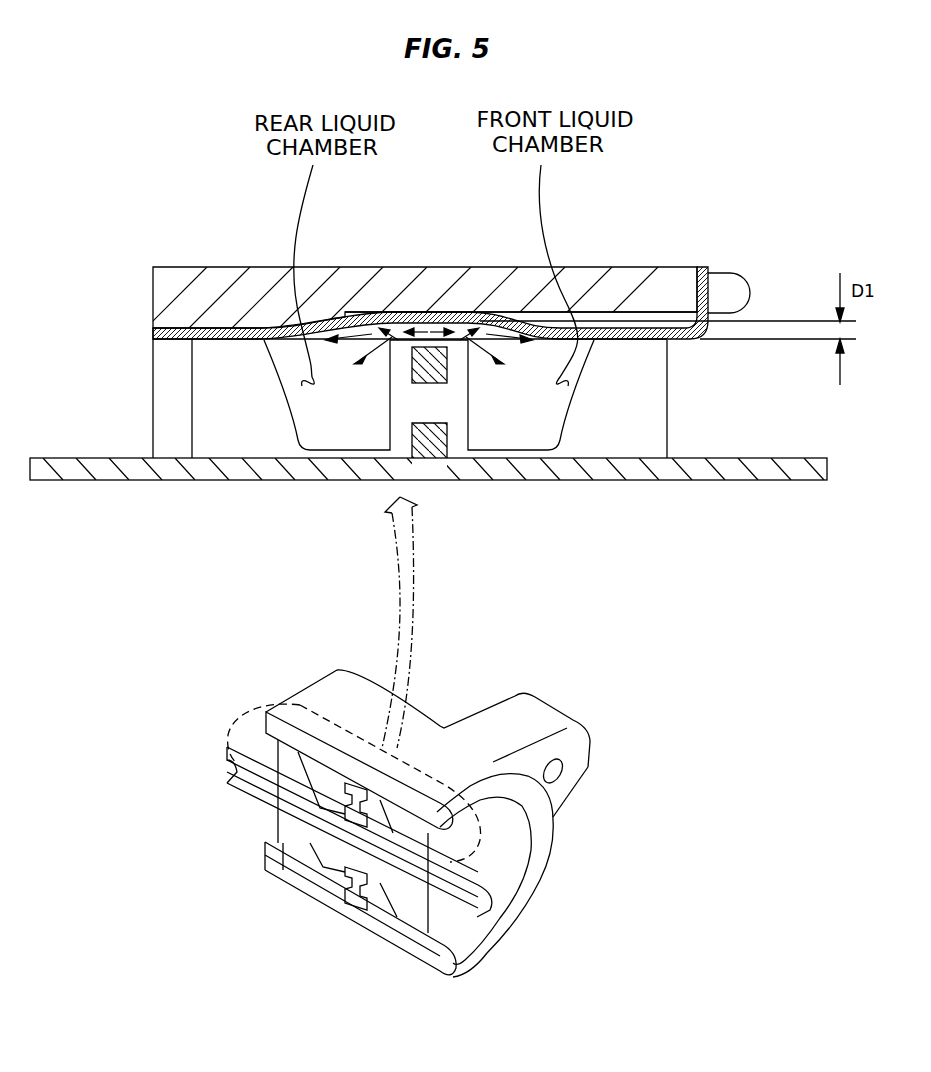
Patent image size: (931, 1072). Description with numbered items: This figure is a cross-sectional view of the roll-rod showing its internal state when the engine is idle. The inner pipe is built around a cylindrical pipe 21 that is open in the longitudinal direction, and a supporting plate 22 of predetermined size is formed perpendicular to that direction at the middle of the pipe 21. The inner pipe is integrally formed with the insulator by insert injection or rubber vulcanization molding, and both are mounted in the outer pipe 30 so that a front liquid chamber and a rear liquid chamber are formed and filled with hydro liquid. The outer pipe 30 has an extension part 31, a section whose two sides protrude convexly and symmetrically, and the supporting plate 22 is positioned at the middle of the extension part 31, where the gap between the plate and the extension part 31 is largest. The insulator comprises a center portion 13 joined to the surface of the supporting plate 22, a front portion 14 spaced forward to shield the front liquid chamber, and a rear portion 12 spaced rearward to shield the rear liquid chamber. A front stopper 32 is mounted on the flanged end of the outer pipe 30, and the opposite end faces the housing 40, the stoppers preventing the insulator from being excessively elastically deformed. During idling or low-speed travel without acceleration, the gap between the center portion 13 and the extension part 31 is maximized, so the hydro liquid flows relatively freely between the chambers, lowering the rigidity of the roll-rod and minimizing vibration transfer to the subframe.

The rear portion 12 is at (217, 378).
The center portion 13 is at (458, 365).
The front portion 14 is at (622, 393).
The cylindrical pipe 21 is at (128, 467).
The supporting plate 22 is at (428, 365).
The outer pipe 30 is at (220, 327).
The extension part 31 is at (385, 310).
The front stopper 32 is at (722, 290).
The housing 40 is at (193, 297).